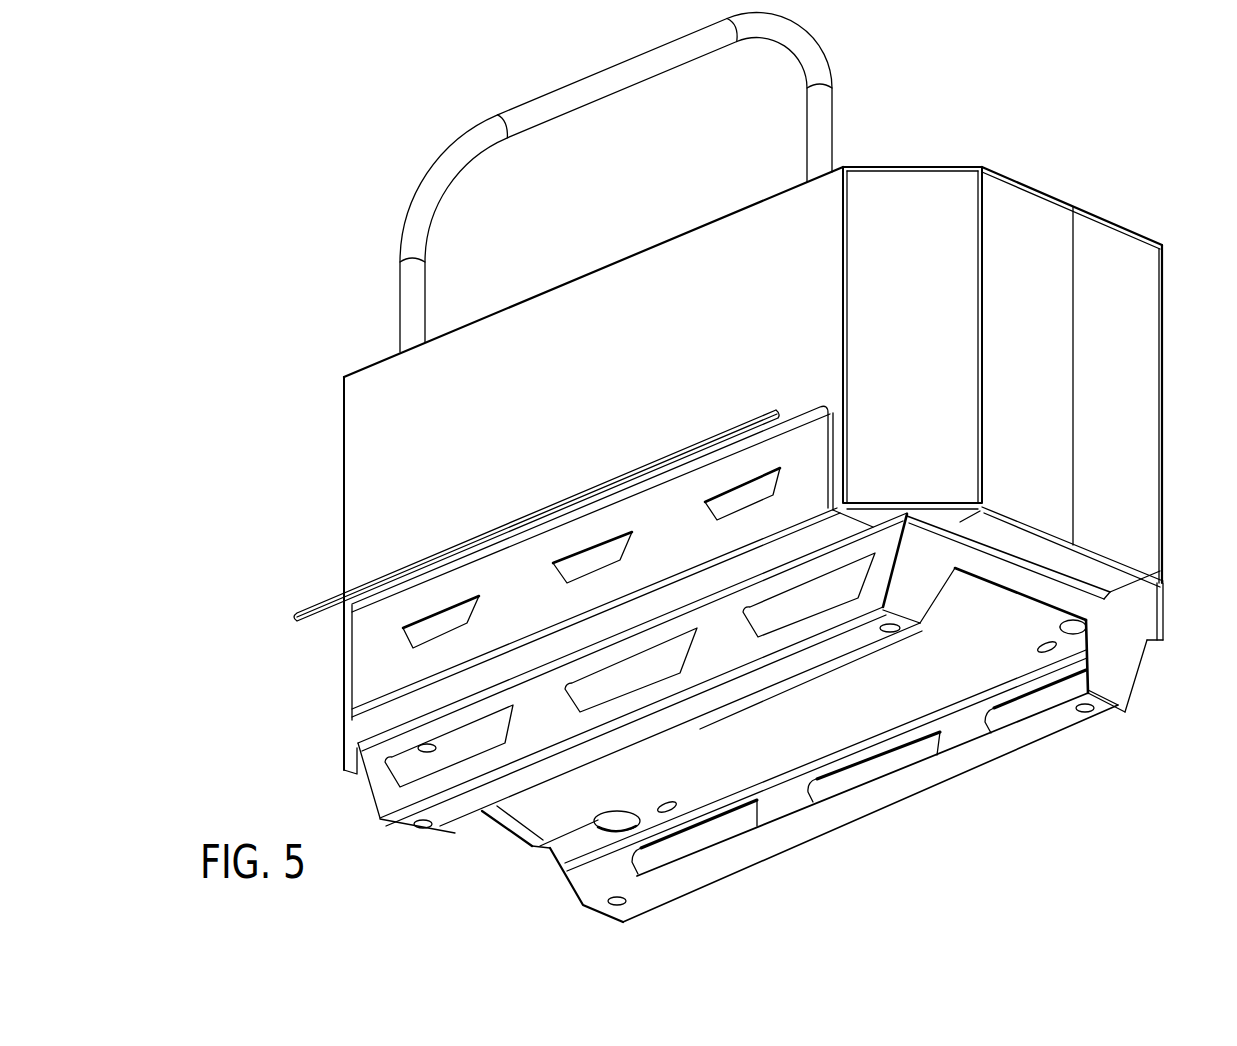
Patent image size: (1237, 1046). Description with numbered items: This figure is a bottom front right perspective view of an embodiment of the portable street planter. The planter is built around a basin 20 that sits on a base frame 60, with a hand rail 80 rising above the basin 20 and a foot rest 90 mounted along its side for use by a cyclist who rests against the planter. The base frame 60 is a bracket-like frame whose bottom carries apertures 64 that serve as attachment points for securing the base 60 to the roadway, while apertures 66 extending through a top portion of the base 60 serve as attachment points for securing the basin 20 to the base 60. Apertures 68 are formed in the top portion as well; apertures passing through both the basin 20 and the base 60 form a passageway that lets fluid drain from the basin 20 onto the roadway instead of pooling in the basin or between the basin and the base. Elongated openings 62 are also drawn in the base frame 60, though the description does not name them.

The basin 20 is at (400, 465).
The base frame 60 is at (1127, 677).
The slots 62 is at (883, 770).
The apertures 64 is at (420, 830).
The apertures 66 is at (1046, 652).
The apertures 68 is at (612, 822).
The hand rail 80 is at (432, 186).
The foot rest 90 is at (320, 610).